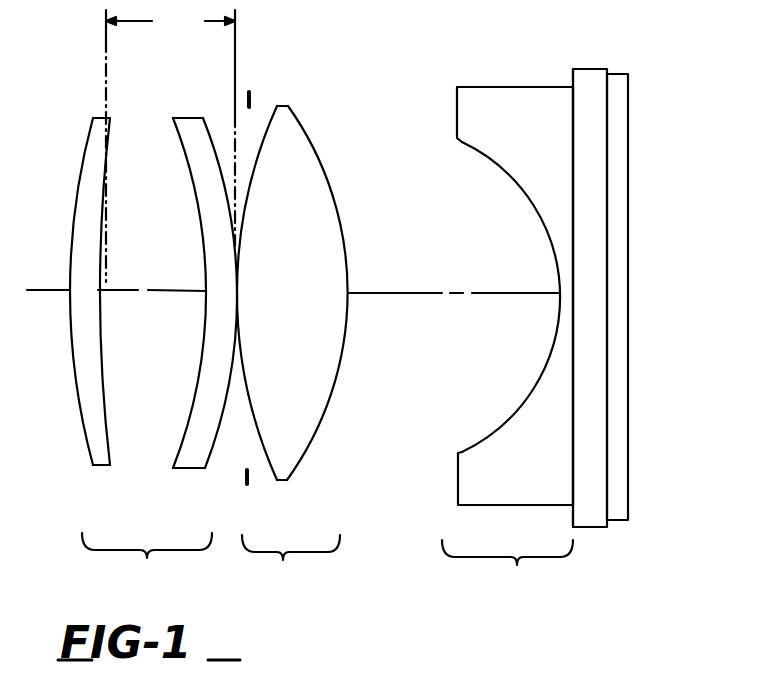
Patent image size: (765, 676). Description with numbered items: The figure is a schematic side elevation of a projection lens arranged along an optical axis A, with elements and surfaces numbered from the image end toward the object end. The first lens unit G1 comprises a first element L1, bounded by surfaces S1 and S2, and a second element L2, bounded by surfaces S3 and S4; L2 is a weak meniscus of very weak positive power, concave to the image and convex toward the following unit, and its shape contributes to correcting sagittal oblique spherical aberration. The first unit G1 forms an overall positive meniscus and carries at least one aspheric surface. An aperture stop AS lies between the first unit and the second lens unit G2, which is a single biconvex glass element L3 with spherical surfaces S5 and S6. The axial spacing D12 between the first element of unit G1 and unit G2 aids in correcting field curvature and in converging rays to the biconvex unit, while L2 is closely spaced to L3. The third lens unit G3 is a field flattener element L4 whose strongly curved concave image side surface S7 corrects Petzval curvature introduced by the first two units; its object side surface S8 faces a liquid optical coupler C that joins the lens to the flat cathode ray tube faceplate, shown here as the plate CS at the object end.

The first lens element L1 is at (86, 275).
The second lens element L2 is at (185, 297).
The biconvex lens element L3 is at (317, 307).
The field flattener element L4 is at (499, 278).
The first lens surface S1 is at (72, 370).
The second lens surface S2 is at (102, 352).
The third lens surface S3 is at (196, 402).
The fourth lens surface S4 is at (208, 432).
The fifth lens surface S5 is at (259, 460).
The sixth lens surface S6 is at (340, 375).
The concave image side surface S7 is at (541, 369).
The eighth lens surface S8 is at (573, 427).
The optical axis A is at (50, 289).
The aperture stop AS is at (254, 99).
The liquid optical coupler C is at (630, 274).
The color separation filter / sensor plate CS is at (630, 75).
The axial spacing D12 is at (170, 144).
The first lens unit G1 is at (147, 565).
The second lens unit G2 is at (291, 566).
The third lens unit G3 is at (507, 571).